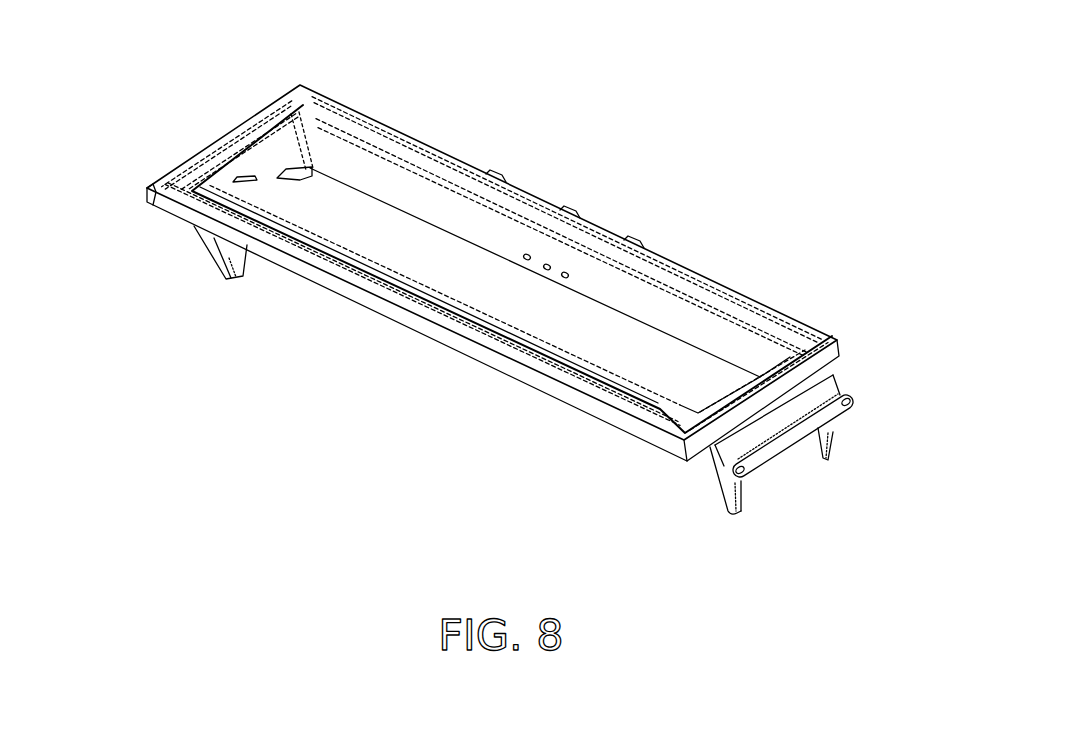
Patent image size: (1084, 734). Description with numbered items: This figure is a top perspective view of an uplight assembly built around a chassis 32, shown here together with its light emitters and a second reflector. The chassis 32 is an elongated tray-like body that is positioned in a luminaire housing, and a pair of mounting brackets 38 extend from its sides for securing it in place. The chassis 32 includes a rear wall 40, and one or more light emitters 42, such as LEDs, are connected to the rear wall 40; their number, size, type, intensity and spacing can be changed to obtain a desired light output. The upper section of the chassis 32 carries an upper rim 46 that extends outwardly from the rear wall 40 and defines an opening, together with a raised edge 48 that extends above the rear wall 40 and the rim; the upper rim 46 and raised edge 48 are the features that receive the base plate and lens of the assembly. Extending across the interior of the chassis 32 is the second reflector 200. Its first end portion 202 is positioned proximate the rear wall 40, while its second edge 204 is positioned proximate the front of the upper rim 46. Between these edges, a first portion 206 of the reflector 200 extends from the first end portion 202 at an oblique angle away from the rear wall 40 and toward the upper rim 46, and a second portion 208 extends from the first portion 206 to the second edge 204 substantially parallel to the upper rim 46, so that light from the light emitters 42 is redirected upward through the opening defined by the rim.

The chassis 32 is at (380, 117).
The mounting brackets 38 is at (779, 442).
The rear wall 40 is at (708, 333).
The light emitters 42 is at (545, 263).
The upper rim 46 is at (197, 185).
The raised edge 48 is at (158, 200).
The second reflector 200 is at (272, 181).
The first end portion 202 is at (417, 213).
The second edge 204 is at (260, 222).
The first portion 206 is at (725, 383).
The second portion 208 is at (482, 316).